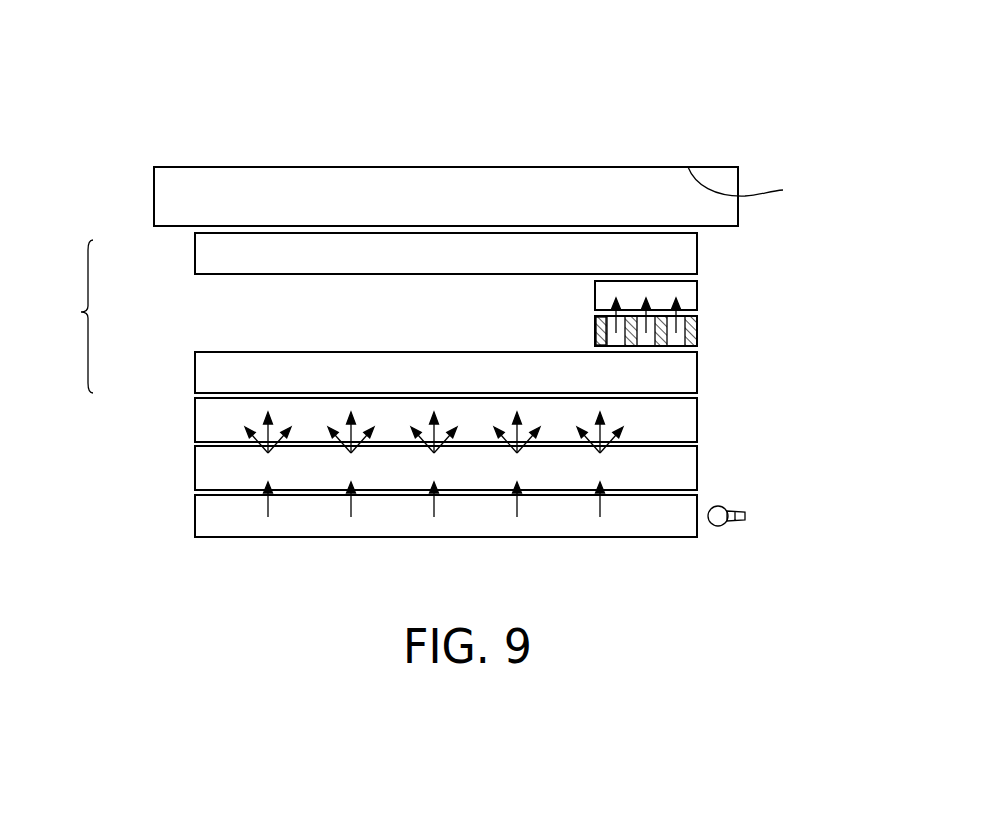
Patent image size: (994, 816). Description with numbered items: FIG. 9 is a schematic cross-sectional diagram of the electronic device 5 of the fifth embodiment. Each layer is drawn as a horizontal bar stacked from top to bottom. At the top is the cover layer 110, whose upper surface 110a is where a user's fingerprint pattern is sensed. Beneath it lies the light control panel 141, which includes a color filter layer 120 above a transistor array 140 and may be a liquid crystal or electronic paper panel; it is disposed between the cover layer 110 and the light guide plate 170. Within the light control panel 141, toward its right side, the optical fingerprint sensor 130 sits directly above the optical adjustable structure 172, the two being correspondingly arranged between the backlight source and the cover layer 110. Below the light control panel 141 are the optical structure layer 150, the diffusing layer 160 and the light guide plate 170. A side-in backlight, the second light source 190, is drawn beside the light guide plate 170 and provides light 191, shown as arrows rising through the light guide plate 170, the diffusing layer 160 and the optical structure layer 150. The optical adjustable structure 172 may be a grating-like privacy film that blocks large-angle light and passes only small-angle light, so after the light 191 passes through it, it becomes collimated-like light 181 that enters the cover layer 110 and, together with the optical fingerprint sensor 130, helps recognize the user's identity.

The electronic device 5 is at (770, 70).
The cover layer 110 is at (168, 195).
The surface of cover plate 110a is at (765, 186).
The color filter layer 120 is at (212, 255).
The optical fingerprint sensor 130 is at (683, 293).
The transistor array 140 is at (212, 372).
The light control panel 141 is at (65, 316).
The optical structure layer 150 is at (205, 421).
The diffusing layer 160 is at (205, 469).
The light guide plate 170 is at (205, 517).
The optical adjustable structure 172 is at (697, 335).
The light 181 is at (595, 327).
The second light source 190 is at (745, 516).
The light 191 is at (600, 451).